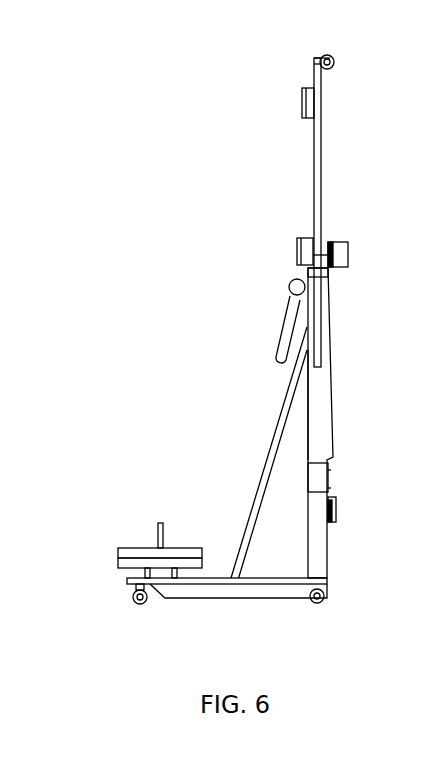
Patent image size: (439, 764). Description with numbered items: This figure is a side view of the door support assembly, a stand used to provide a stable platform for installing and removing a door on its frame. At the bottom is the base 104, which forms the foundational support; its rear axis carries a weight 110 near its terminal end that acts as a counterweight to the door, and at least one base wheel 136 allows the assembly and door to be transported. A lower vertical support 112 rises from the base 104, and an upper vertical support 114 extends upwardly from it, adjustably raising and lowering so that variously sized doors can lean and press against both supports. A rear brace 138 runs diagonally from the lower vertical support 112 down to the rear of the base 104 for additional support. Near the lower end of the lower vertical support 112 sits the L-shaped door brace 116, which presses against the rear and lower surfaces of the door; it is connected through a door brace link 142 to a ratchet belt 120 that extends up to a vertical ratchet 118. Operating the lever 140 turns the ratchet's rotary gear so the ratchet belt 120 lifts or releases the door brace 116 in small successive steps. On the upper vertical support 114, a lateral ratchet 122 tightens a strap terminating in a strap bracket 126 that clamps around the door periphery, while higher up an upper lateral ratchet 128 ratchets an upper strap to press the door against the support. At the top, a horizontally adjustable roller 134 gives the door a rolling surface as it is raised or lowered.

The base 104 is at (262, 599).
The weight 110 is at (118, 556).
The lower vertical support 112 is at (308, 443).
The upper vertical support 114 is at (327, 170).
The door brace 116 is at (340, 522).
The vertical ratchet 118 is at (297, 284).
The ratchet belt 120 is at (333, 402).
The lateral ratchet 122 is at (290, 240).
The strap bracket 126 is at (350, 255).
The upper lateral ratchet 128 is at (302, 98).
The roller 134 is at (335, 61).
The base wheel 136 is at (133, 597).
The rear brace 138 is at (265, 462).
The lever 140 is at (283, 335).
The door brace link 142 is at (330, 477).